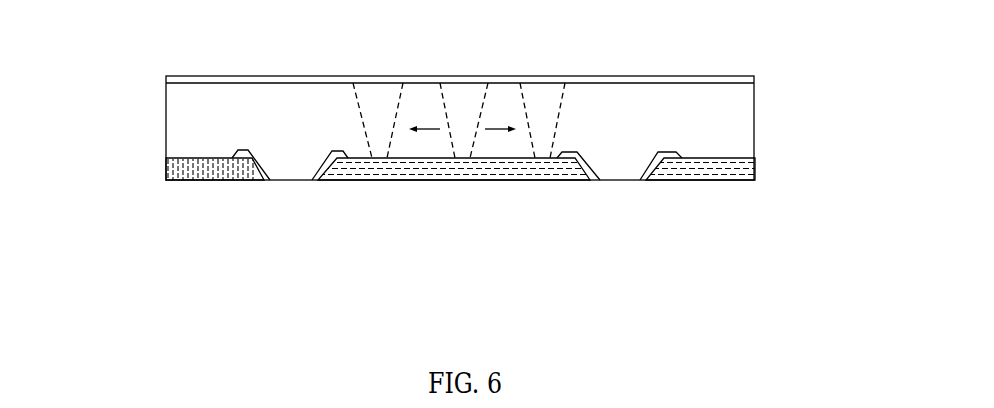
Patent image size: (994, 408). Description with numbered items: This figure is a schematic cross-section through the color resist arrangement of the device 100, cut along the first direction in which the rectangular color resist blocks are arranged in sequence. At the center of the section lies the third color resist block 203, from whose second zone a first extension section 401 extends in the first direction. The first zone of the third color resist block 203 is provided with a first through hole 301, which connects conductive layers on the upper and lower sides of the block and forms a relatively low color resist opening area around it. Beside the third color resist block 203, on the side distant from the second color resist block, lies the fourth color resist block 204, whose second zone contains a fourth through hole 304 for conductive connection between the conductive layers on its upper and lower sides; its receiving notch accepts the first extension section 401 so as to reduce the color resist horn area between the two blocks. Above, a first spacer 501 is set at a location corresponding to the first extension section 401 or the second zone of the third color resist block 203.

The display device 100 is at (165, 33).
The third color resist block 203 is at (380, 170).
The fourth color resist block 204 is at (734, 168).
The first through hole 301 is at (274, 170).
The fourth through hole 304 is at (644, 163).
The first extension section 401 is at (553, 170).
The first spacer 501 is at (458, 107).